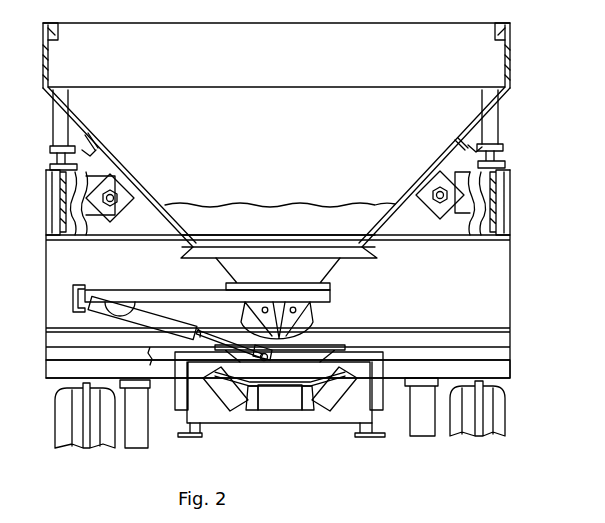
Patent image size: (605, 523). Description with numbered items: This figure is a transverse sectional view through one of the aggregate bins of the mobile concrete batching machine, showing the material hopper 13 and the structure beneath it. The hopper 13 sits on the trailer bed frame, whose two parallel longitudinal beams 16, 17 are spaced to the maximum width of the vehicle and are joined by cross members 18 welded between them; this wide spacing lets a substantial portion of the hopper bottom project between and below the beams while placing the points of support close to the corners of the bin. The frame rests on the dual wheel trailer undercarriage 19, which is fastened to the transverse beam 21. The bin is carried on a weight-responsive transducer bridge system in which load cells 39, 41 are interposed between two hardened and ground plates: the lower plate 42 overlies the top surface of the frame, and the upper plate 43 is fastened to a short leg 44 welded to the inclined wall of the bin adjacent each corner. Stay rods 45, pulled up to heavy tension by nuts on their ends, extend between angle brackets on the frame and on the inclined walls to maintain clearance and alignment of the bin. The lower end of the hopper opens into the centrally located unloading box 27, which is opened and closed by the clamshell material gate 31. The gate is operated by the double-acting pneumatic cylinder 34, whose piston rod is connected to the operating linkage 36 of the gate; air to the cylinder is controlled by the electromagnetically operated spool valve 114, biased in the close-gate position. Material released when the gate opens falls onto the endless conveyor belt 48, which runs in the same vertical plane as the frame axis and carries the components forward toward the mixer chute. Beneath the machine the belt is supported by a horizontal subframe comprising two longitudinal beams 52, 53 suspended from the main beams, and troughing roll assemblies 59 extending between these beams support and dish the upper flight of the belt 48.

The material hopper 13 is at (510, 55).
The longitudinal beam 16 is at (497, 205).
The longitudinal beam 17 is at (50, 186).
The cross member 18 is at (470, 230).
The dual wheel trailer undercarriage 19 is at (512, 373).
The transverse beam 21 is at (510, 268).
The unloading box 27 is at (314, 311).
The clamshell material gate 31 is at (310, 341).
The double-acting pneumatic cylinder 34 is at (188, 325).
The operating linkage 36 is at (265, 362).
The load cell 39 is at (500, 154).
The load cell 41 is at (492, 166).
The lower plate 42 is at (50, 148).
The upper plate 43 is at (50, 166).
The short leg 44 is at (500, 130).
The stay rod 45 is at (440, 206).
The endless conveyor belt 48 is at (272, 410).
The subframe longitudinal beam 52 is at (375, 422).
The subframe longitudinal beam 53 is at (180, 431).
The troughing roll assembly 59 is at (330, 395).
The electromagnetically operated spool valve 114 is at (88, 320).